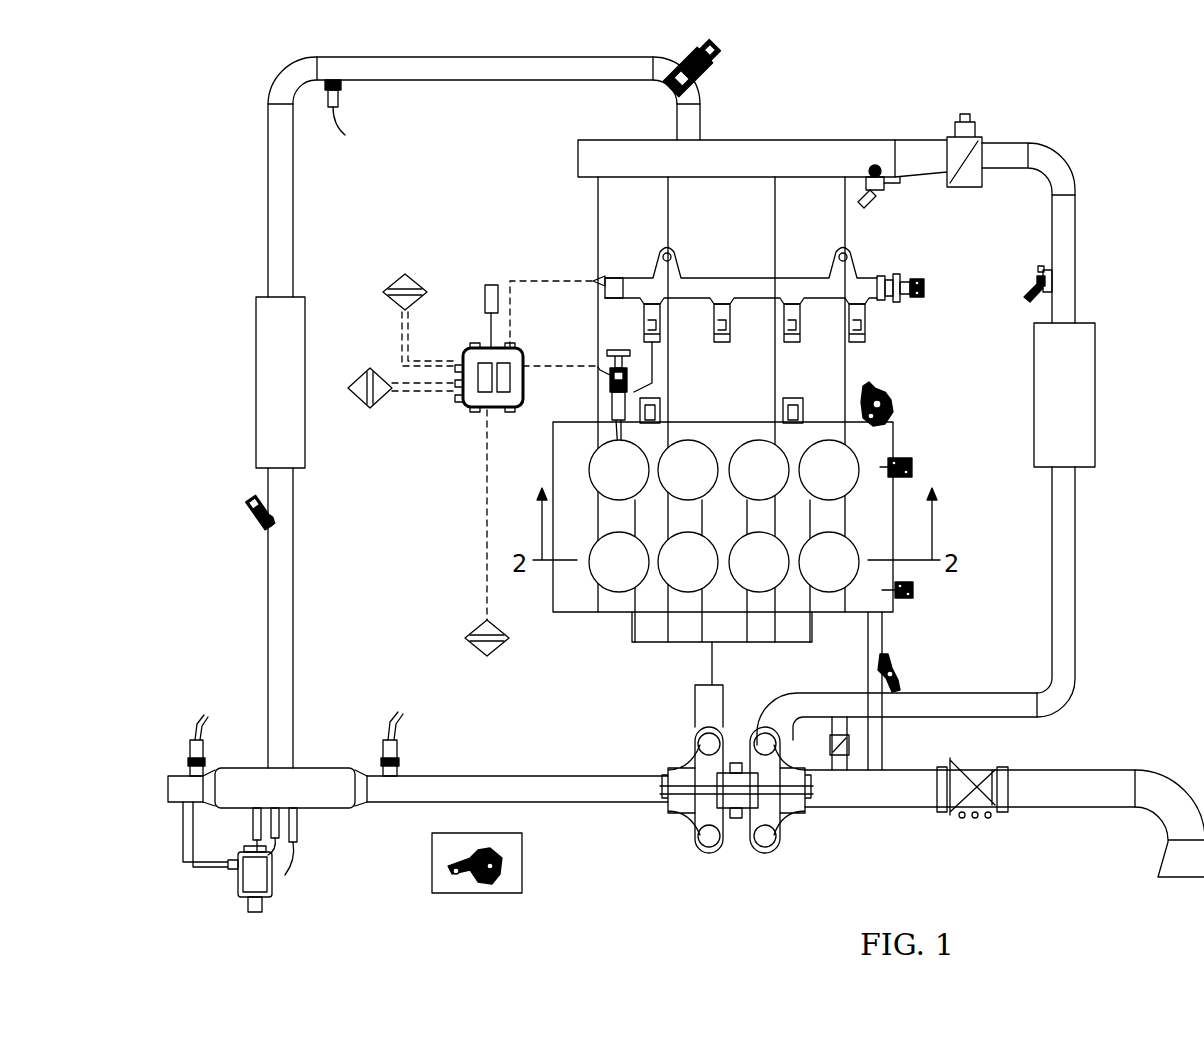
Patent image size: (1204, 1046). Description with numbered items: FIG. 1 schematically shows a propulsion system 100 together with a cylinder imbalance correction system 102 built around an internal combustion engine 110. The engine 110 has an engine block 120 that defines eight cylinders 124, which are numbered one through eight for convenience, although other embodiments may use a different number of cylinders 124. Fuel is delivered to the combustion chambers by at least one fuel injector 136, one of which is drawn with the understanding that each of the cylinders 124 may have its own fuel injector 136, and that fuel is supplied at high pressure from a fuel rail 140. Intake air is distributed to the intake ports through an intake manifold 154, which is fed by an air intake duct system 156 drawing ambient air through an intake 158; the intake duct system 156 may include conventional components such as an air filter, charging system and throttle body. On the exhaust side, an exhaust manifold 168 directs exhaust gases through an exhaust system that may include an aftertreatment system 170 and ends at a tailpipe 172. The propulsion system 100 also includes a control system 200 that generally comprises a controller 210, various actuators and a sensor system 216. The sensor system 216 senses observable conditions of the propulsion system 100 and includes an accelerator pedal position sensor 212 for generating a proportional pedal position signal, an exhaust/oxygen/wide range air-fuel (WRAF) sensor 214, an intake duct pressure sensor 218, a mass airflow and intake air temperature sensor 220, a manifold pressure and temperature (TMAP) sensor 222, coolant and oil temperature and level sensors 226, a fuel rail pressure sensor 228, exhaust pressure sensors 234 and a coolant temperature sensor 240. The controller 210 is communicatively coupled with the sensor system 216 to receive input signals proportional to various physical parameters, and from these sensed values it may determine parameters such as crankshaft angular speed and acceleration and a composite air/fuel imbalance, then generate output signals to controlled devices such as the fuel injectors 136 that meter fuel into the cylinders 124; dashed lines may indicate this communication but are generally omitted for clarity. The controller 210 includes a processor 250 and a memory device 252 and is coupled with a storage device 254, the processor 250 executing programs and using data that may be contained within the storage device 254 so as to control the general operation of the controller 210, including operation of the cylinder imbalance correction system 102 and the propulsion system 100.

The propulsion system 100 is at (924, 108).
The cylinder imbalance correction system 102 is at (460, 453).
The internal combustion engine 110 is at (569, 615).
The engine block 120 is at (896, 516).
The cylinders 124 is at (594, 574).
The fuel injector 136 is at (612, 400).
The fuel rail 140 is at (752, 277).
The intake manifold 154 is at (770, 139).
The air intake duct system 156 is at (892, 818).
The intake 158 is at (1176, 878).
The exhaust manifold 168 is at (670, 645).
The aftertreatment system 170 is at (329, 793).
The tailpipe 172 is at (166, 794).
The control system 200 is at (447, 296).
The controller 210 is at (489, 389).
The accelerator pedal position sensor 212 is at (500, 869).
The exhaust/oxygen/wide range air-fuel (WRAF) sensor 214 is at (399, 762).
The sensor system 216 is at (940, 313).
The intake duct pressure sensor 218 is at (961, 819).
The mass airflow and intake air temperature sensor 220 is at (986, 816).
The manifold pressure and temperature (TMAP) sensor 222 is at (873, 193).
The coolant and oil temperature and level sensors 226 is at (912, 460).
The fuel rail pressure sensor 228 is at (906, 301).
The exhaust pressure sensors 234 is at (293, 846).
The coolant temperature sensor 240 is at (912, 599).
The processor 250 is at (484, 391).
The memory device 252 is at (511, 378).
The storage device 254 is at (496, 283).